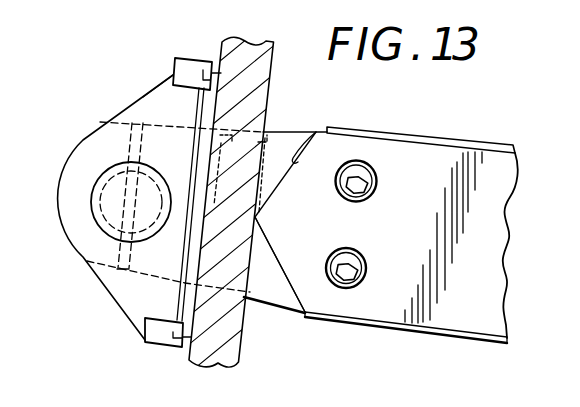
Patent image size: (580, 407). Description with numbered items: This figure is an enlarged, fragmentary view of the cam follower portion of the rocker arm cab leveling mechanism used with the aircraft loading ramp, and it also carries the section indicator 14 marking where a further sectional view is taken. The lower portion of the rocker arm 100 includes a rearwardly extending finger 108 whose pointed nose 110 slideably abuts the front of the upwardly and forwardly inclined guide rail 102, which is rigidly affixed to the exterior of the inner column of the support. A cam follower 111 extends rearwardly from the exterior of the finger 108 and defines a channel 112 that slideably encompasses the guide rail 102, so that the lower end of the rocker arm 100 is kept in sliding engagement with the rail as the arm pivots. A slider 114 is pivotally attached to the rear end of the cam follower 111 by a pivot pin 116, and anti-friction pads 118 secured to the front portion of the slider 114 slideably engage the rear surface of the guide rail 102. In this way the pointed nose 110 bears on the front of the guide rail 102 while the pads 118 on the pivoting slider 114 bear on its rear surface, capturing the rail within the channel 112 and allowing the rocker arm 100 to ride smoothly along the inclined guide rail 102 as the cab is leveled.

The rocker arm 100 is at (398, 128).
The guide rail 102 is at (273, 30).
The finger 108 is at (375, 310).
The pointed nose 110 is at (302, 132).
The cam follower 111 is at (144, 98).
The channel 112 is at (285, 282).
The slider 114 is at (122, 293).
The pivot pin 116 is at (114, 181).
The anti-friction pads 118 is at (177, 63).
The section line 14- 14 is at (43, 218).